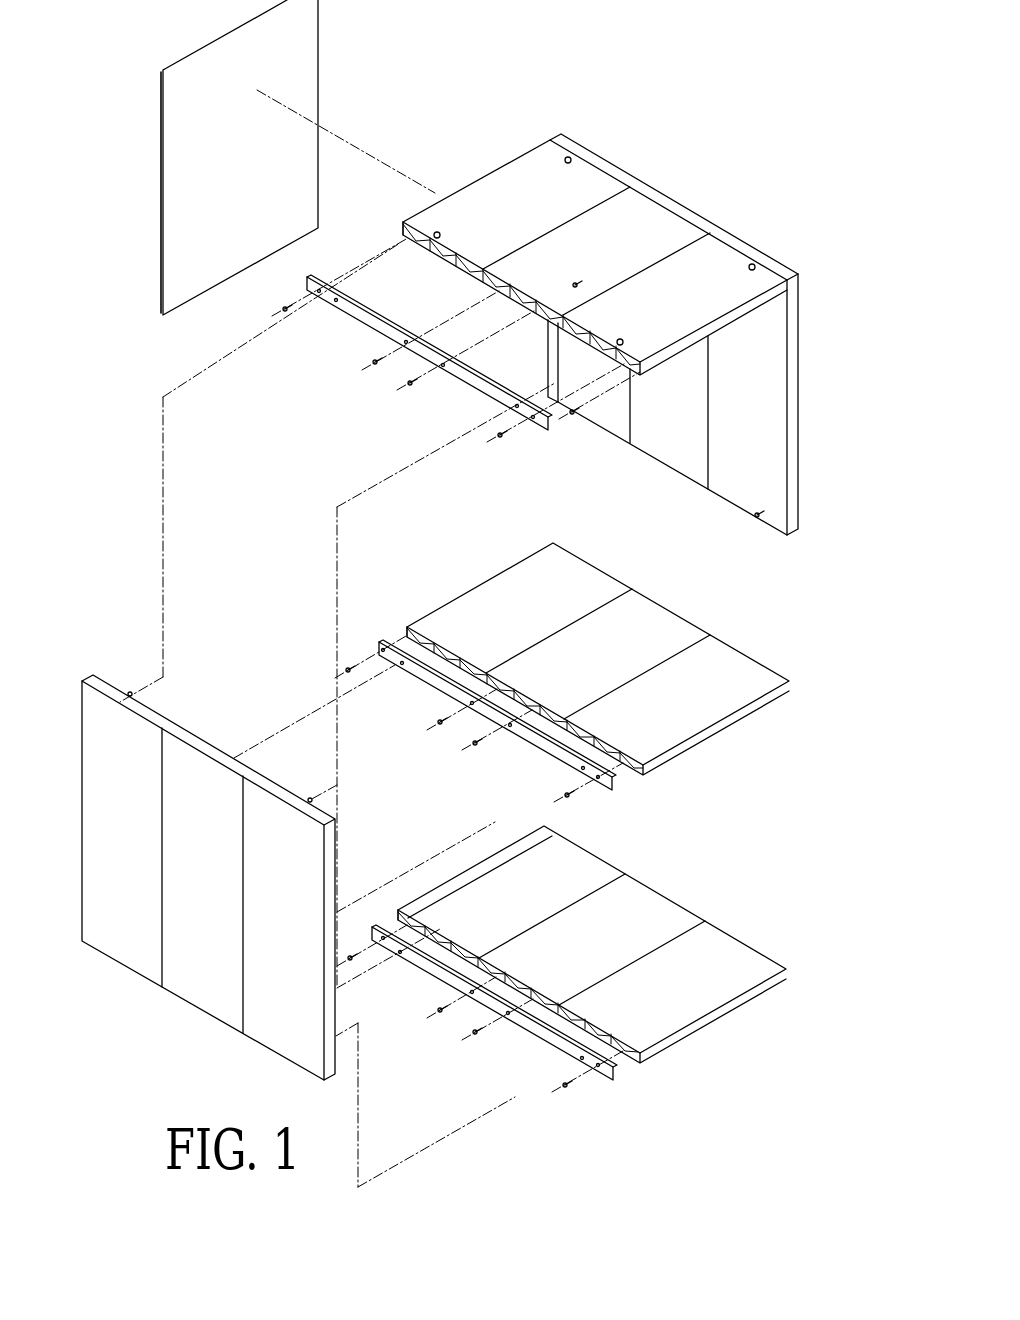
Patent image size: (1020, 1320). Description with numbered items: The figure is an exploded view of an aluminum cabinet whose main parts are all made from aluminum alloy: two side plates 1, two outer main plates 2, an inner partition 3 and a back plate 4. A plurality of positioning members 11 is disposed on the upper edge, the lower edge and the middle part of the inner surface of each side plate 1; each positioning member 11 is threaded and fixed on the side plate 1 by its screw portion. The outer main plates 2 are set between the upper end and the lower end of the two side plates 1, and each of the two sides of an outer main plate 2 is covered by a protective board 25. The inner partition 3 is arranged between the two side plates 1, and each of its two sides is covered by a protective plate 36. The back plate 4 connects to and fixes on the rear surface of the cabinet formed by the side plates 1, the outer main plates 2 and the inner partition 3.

The side plate 1 is at (792, 402).
The outer main plate 2 is at (476, 187).
The inner partition 3 is at (733, 716).
The back plate 4 is at (308, 50).
The positioning member 11 is at (757, 537).
The protective board 25 is at (615, 1073).
The protective plate 36 is at (612, 782).